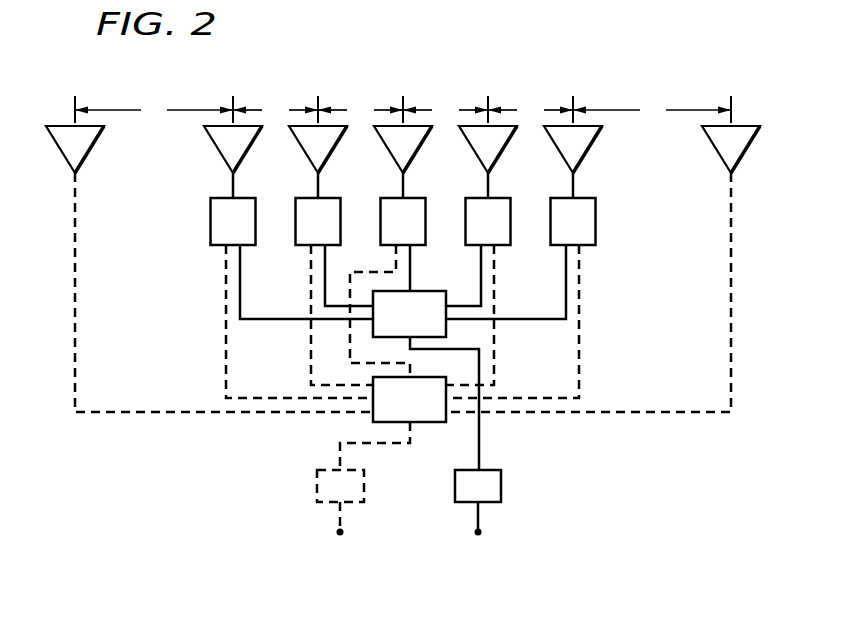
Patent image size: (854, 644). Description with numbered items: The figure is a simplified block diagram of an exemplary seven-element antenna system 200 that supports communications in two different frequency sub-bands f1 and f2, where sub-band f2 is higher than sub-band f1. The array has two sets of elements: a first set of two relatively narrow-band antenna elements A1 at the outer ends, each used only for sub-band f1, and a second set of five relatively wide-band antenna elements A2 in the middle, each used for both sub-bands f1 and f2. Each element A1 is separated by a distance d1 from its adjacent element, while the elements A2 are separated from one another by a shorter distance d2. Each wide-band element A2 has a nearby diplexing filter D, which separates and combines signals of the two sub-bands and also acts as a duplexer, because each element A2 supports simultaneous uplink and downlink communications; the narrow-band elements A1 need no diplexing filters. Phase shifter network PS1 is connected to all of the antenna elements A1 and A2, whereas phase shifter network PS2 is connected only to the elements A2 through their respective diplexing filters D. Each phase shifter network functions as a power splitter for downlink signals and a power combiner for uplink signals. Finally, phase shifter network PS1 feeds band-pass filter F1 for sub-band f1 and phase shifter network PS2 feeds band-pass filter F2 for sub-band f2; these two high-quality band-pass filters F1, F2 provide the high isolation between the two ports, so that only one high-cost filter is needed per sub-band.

The seven-element antenna system 200 is at (170, 76).
The relatively narrow-band antenna element A1 is at (398, 269).
The relatively wide-band antenna element A2 is at (398, 162).
The diplexing filter D is at (403, 298).
The phase shifter network PS1 is at (393, 423).
The phase shifter network PS2 is at (426, 380).
The band-pass filter F1 is at (340, 503).
The band-pass filter F2 is at (478, 503).
The sub-band f1 is at (327, 457).
The sub-band f2 is at (460, 457).
The distance d1 is at (403, 109).
The distance d2 is at (403, 109).